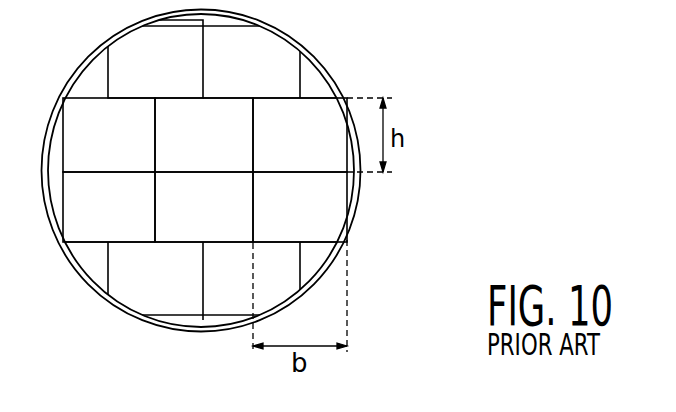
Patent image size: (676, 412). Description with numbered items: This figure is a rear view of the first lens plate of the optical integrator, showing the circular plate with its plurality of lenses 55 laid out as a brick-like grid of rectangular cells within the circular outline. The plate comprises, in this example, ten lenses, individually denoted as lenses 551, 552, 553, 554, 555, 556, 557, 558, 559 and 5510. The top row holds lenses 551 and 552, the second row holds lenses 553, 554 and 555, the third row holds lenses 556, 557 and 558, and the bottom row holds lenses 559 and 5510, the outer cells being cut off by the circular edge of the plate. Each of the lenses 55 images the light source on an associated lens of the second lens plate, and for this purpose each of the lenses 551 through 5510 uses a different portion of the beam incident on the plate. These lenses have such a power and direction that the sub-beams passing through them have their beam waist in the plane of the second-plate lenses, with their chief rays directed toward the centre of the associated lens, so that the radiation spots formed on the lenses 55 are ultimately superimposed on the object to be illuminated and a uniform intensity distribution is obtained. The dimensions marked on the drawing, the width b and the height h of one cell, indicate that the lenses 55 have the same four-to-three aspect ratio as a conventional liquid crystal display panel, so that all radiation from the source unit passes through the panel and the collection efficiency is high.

The lenses 55 is at (200, 170).
The first lens 551 is at (111, 59).
The second lens 552 is at (291, 59).
The third lens 553 is at (109, 135).
The fourth lens 554 is at (204, 135).
The fifth lens 555 is at (300, 135).
The sixth lens 556 is at (109, 207).
The seventh lens 557 is at (204, 207).
The eighth lens 558 is at (300, 207).
The ninth lens 559 is at (111, 281).
The tenth lens 5510 is at (291, 281).